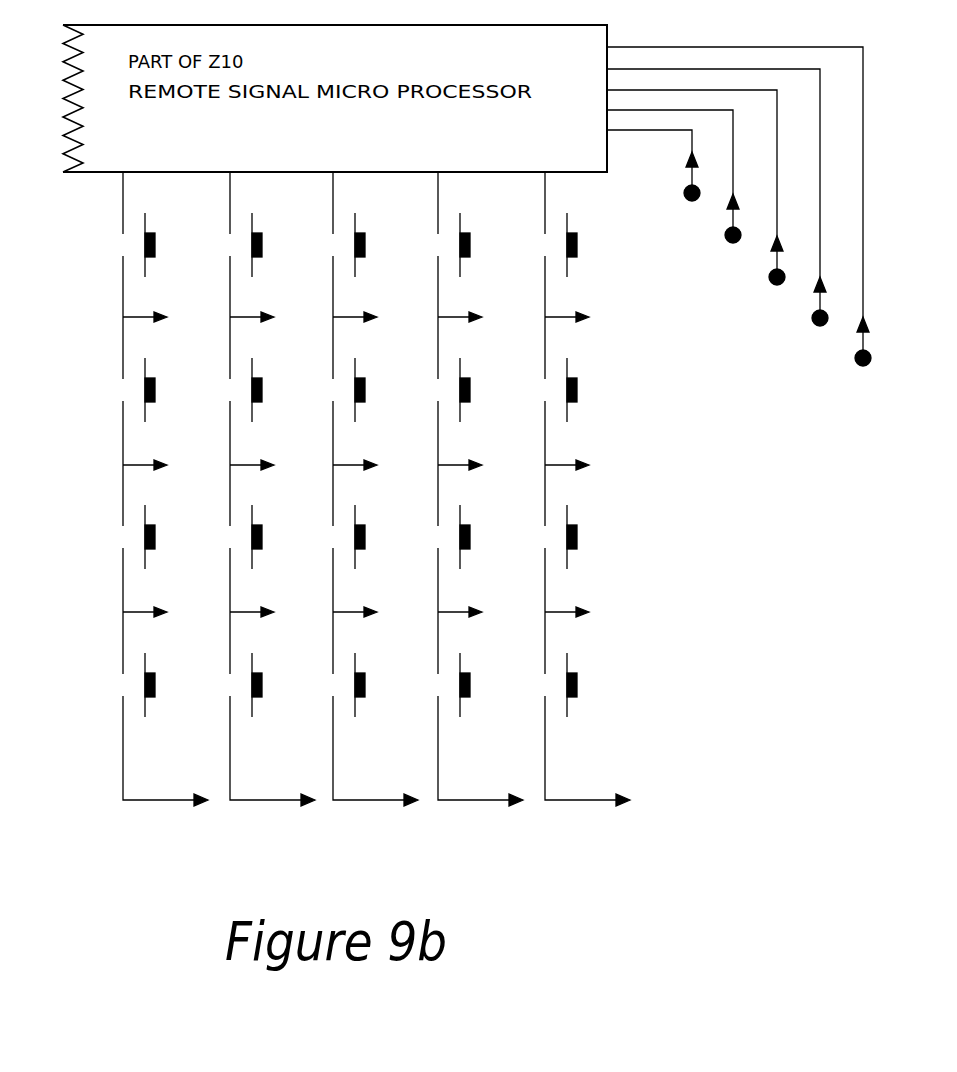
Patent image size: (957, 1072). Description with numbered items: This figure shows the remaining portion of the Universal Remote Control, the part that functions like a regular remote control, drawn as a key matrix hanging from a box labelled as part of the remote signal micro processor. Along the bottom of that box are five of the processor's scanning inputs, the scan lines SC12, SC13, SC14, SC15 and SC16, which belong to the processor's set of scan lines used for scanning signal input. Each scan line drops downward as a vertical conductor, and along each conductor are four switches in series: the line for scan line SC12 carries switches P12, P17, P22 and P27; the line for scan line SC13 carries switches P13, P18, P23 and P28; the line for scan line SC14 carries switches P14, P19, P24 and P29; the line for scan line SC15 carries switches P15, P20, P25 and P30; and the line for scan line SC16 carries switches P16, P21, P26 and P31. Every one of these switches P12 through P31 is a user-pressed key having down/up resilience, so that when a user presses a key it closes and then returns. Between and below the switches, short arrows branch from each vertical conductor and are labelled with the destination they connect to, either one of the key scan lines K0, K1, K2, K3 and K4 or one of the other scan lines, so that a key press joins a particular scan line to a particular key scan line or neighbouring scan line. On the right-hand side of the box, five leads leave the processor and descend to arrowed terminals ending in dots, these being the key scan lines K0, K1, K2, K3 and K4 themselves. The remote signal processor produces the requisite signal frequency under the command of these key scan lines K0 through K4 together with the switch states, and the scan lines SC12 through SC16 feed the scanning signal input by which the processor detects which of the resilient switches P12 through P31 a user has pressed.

The scan line SC12 is at (154, 469).
The scan line SC13 is at (261, 469).
The scan line SC14 is at (364, 469).
The scan line SC15 is at (469, 469).
The scan line SC16 is at (576, 469).
The key scan line K0 is at (653, 165).
The key scan line K1 is at (674, 176).
The key scan line K2 is at (696, 187).
The key scan line K3 is at (717, 197).
The key scan line K4 is at (739, 206).
The switch P12 is at (167, 245).
The switch P13 is at (274, 245).
The switch P14 is at (377, 245).
The switch P15 is at (482, 245).
The switch P16 is at (589, 245).
The switch P17 is at (167, 390).
The switch P18 is at (274, 390).
The switch P19 is at (377, 390).
The switch P20 is at (482, 390).
The switch P21 is at (589, 390).
The switch P22 is at (167, 537).
The switch P23 is at (274, 537).
The switch P24 is at (377, 537).
The switch P25 is at (482, 537).
The switch P26 is at (589, 537).
The switch P27 is at (167, 685).
The switch P28 is at (274, 685).
The switch P29 is at (377, 685).
The switch P30 is at (482, 685).
The switch P31 is at (589, 685).